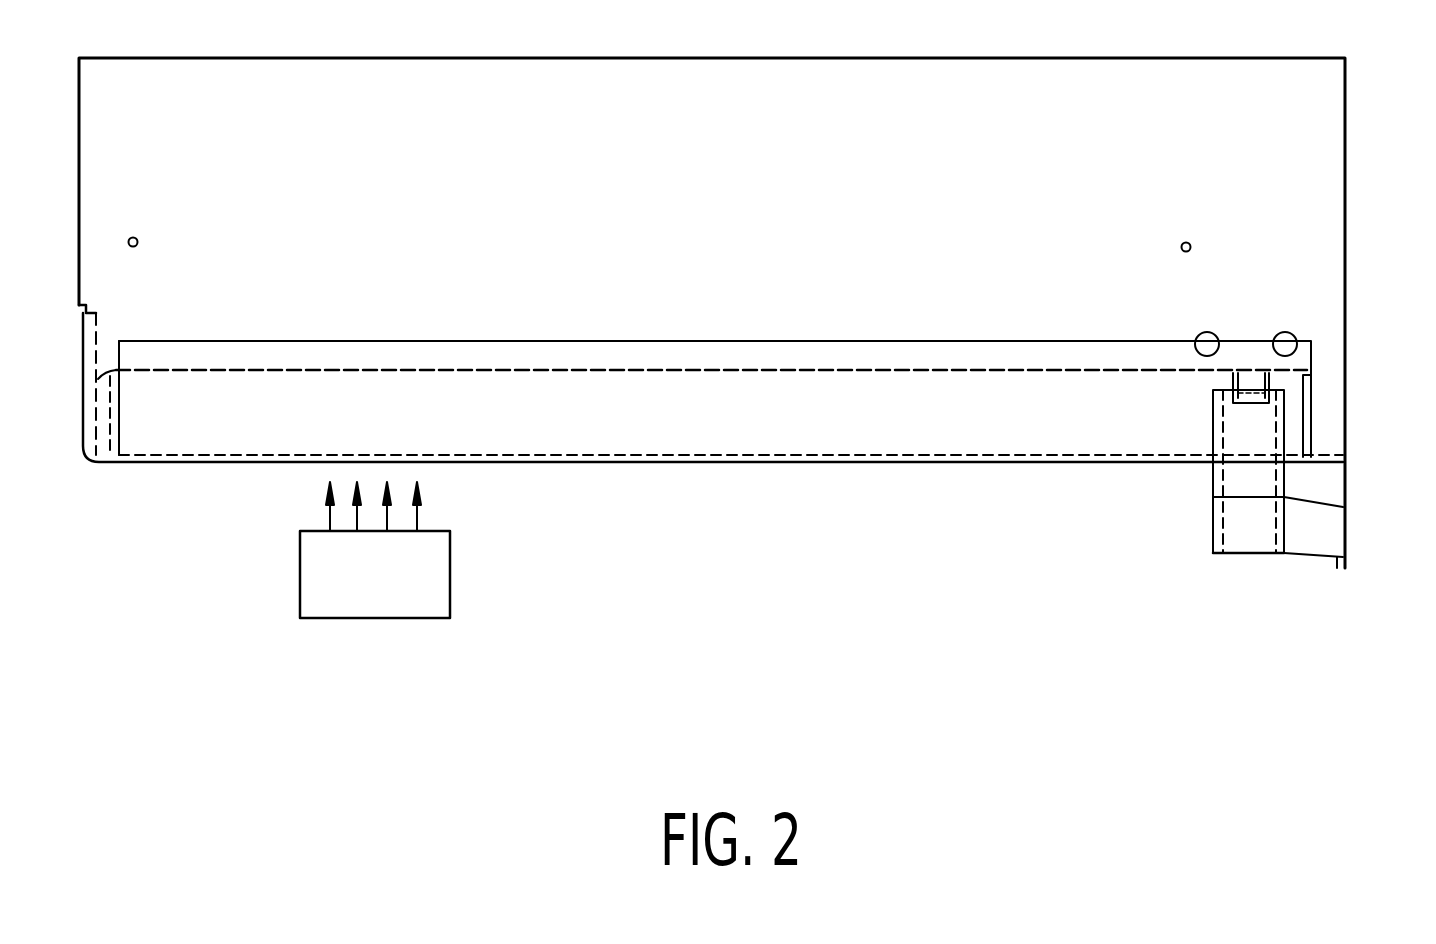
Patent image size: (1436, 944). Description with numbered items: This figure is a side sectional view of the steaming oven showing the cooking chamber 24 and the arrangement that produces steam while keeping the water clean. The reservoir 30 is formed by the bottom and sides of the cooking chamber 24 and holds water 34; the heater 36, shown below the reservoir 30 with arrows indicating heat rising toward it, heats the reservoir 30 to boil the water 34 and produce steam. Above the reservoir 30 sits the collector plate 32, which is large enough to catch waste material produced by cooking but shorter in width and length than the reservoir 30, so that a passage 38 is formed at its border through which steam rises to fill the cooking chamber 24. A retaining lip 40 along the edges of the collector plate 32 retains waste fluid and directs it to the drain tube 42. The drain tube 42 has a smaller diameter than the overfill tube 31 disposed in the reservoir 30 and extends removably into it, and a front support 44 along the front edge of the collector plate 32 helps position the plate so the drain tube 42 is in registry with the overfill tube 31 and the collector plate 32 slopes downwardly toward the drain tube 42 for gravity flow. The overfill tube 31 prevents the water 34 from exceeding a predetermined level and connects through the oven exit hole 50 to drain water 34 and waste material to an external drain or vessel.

The cooking chamber 24 is at (700, 235).
The reservoir 30 is at (207, 458).
The overfill tube 31 is at (1233, 435).
The collector plate 32 is at (223, 340).
The water 34 is at (472, 440).
The heater 36 is at (451, 580).
The passage 38 is at (1331, 364).
The retaining lip 40 is at (395, 357).
The drain tube 42 is at (1233, 384).
The front support 44 is at (100, 419).
The oven exit hole 50 is at (1325, 529).